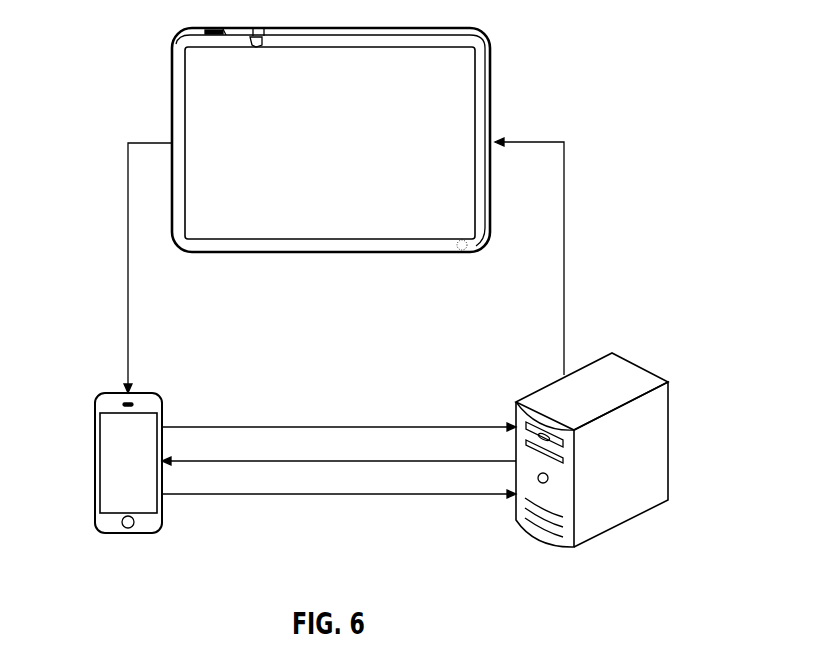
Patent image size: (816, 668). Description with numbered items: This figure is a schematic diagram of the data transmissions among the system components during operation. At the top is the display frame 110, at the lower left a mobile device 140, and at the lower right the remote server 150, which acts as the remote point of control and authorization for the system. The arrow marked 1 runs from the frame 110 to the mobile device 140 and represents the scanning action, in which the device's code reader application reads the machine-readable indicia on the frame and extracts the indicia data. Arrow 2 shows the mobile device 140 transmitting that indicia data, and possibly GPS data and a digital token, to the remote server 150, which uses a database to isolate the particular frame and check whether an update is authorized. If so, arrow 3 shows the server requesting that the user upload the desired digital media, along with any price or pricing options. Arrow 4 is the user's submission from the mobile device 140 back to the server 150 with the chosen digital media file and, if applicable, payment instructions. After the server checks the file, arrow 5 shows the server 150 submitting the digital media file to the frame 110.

The display frame 110 is at (172, 92).
The mobile device 140 is at (95, 465).
The remote server 150 is at (668, 450).
The scanning action arrow 1 is at (128, 260).
The indicia data transmission arrow 2 is at (337, 427).
The upload request arrow 3 is at (337, 461).
The digital media submission arrow 4 is at (337, 494).
The media delivery arrow 5 is at (564, 258).